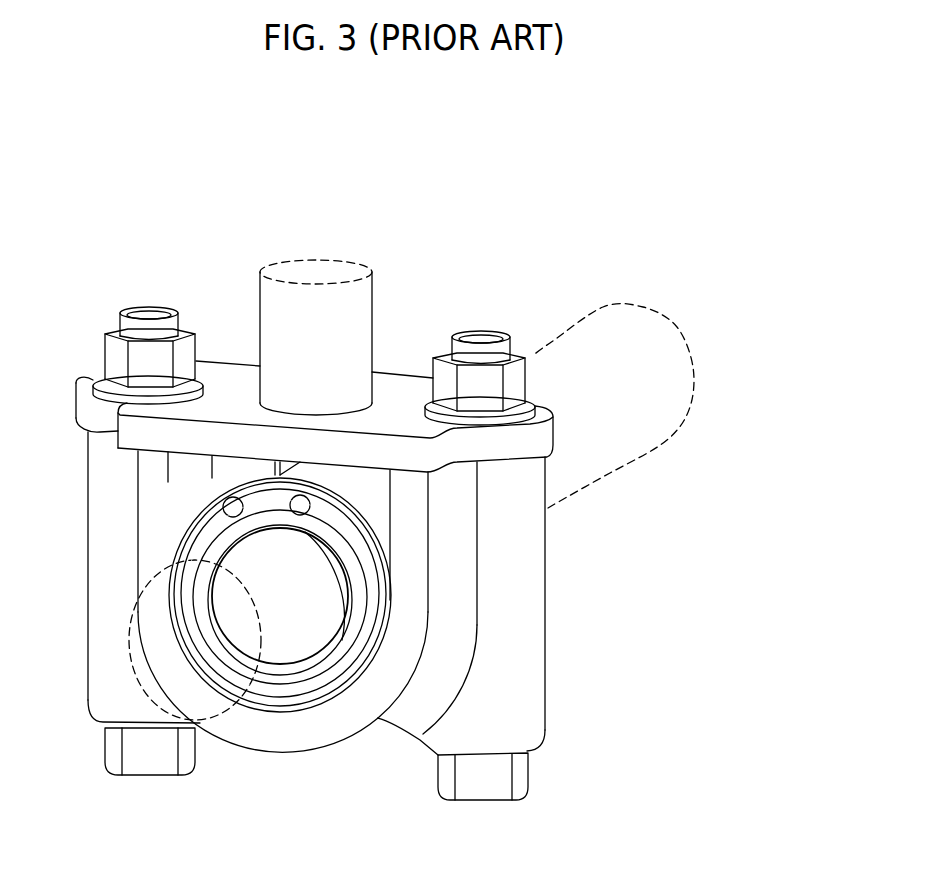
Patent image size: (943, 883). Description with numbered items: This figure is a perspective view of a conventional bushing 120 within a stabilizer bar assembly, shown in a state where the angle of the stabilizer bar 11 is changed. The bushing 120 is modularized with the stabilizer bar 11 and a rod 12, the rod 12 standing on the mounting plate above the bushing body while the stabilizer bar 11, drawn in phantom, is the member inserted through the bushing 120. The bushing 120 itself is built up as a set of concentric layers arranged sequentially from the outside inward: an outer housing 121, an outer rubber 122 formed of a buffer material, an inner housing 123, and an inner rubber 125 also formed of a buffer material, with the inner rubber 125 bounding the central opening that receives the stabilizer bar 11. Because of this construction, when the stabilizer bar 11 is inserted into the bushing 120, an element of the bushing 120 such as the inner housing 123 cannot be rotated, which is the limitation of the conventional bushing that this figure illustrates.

The stabilizer bar 11 is at (583, 365).
The rod 12 is at (317, 330).
The bushing 120 is at (702, 508).
The outer housing 121 is at (355, 483).
The outer rubber 122 is at (373, 540).
The inner housing 123 is at (368, 593).
The inner rubber 125 is at (340, 643).